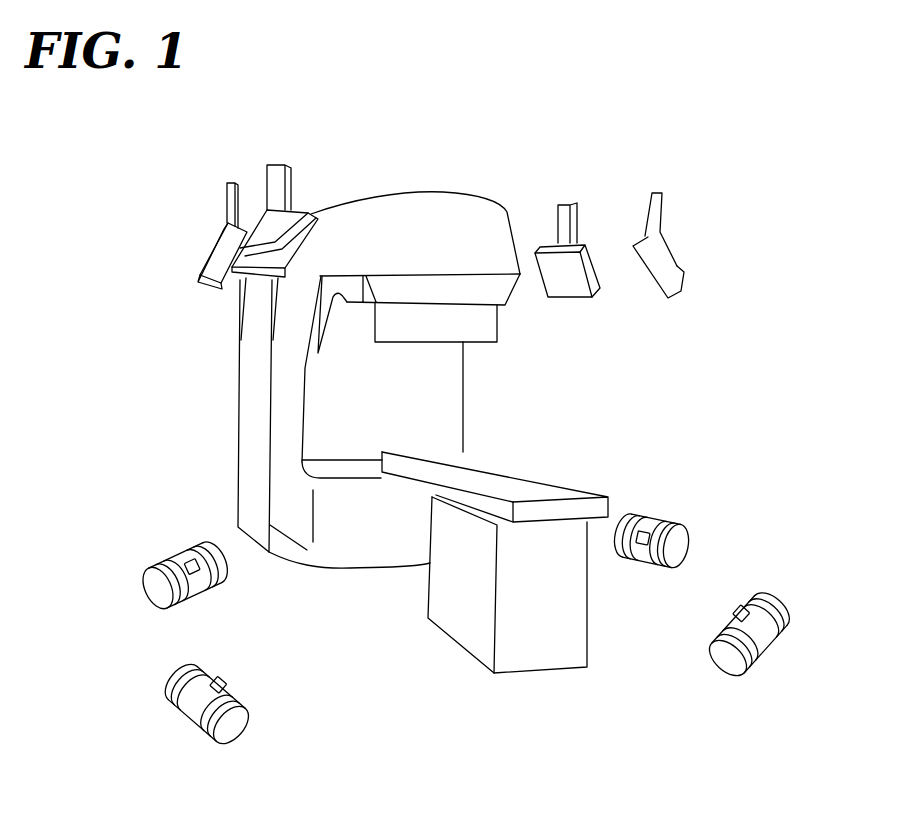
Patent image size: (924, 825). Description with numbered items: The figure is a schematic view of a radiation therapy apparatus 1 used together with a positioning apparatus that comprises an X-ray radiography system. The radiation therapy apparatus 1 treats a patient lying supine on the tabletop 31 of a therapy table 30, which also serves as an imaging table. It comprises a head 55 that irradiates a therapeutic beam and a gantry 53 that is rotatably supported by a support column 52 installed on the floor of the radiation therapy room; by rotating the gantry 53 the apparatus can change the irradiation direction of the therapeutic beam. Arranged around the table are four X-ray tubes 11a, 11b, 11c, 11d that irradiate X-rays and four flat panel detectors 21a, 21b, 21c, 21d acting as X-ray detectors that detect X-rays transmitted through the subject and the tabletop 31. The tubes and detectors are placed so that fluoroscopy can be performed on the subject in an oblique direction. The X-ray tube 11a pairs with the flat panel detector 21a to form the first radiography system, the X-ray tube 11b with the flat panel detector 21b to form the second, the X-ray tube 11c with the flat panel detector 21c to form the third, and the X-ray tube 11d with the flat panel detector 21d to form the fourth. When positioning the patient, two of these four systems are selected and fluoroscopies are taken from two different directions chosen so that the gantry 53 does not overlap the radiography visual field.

The radiation therapy apparatus 1 is at (454, 178).
The X-ray tube 11a is at (178, 555).
The X-ray tube 11b is at (769, 637).
The X-ray tube 11c is at (193, 703).
The X-ray tube 11d is at (653, 518).
The flat panel detector 21a is at (668, 281).
The flat panel detector 21b is at (218, 279).
The flat panel detector 21c is at (567, 289).
The flat panel detector 21d is at (260, 264).
The therapy table 30 is at (398, 593).
The tabletop 31 is at (521, 481).
The support column 52 is at (250, 403).
The gantry 53 is at (443, 403).
The head 55 is at (487, 327).